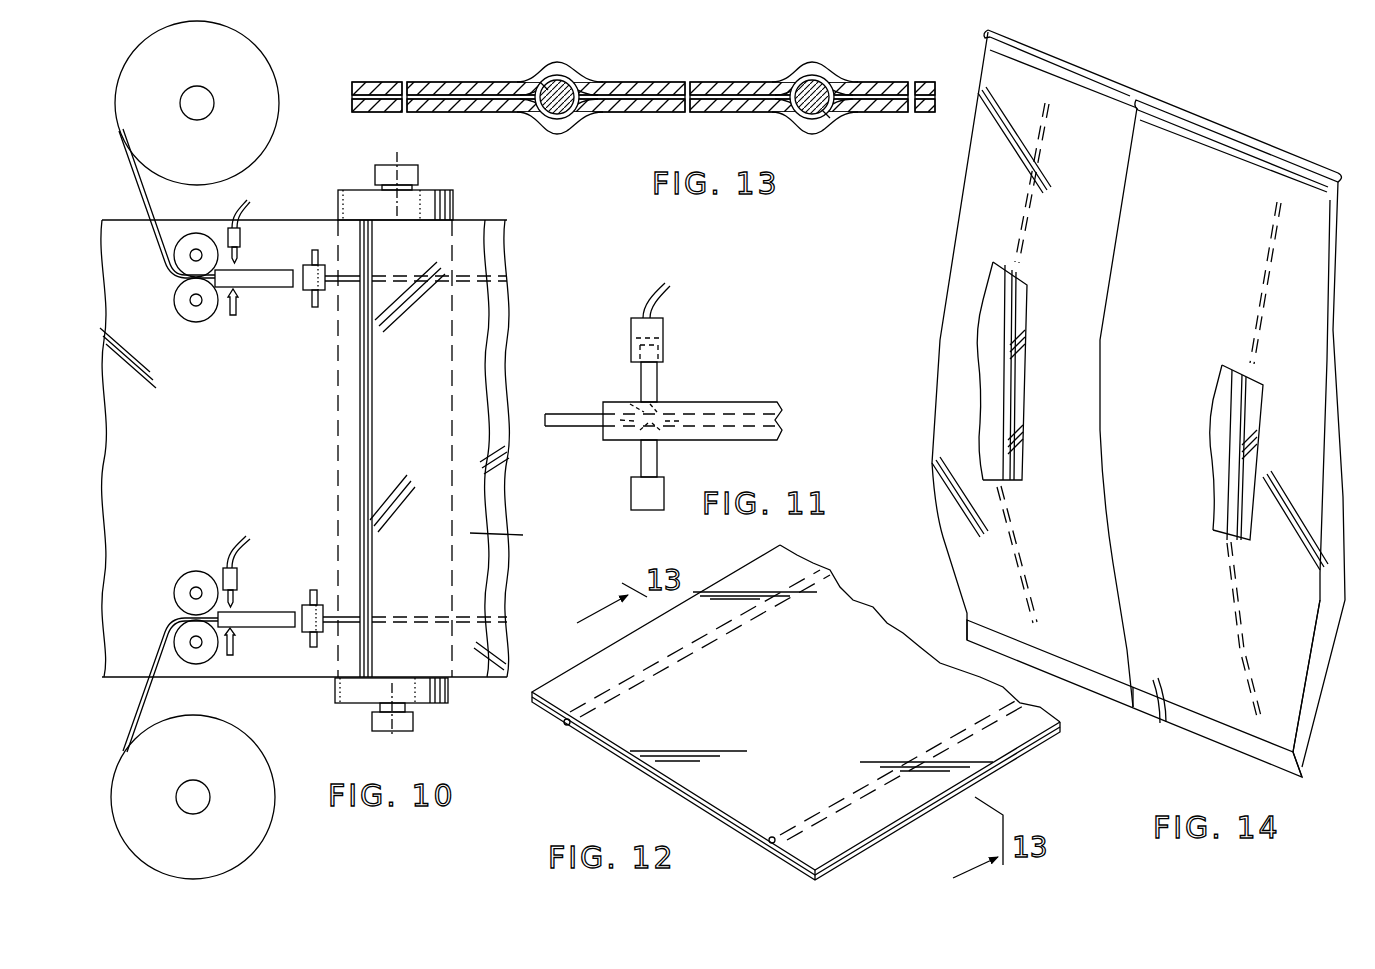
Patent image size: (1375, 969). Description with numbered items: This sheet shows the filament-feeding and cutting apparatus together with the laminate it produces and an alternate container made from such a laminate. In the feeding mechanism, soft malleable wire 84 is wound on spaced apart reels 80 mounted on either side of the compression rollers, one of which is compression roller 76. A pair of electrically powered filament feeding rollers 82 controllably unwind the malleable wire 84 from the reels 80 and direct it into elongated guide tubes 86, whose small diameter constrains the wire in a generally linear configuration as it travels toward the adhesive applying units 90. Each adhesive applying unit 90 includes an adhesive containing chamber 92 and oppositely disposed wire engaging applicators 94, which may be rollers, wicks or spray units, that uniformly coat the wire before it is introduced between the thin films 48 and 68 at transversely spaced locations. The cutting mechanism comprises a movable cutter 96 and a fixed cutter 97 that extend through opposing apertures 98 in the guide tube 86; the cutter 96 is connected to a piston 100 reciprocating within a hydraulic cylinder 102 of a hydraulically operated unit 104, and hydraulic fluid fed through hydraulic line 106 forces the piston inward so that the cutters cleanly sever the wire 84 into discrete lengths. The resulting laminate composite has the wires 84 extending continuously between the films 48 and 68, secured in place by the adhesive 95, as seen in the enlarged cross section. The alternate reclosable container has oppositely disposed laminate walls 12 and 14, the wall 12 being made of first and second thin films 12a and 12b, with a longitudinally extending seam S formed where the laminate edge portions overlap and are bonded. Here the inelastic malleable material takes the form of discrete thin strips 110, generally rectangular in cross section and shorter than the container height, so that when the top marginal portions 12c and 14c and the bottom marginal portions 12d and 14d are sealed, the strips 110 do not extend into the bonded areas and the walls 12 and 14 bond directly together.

In FIG. 14, the wall 12 is at (947, 248).
In FIG. 14, the first thin film 12a is at (979, 360).
In FIG. 14, the second thin film 12b is at (1013, 387).
In FIG. 14, the top marginal portion 12c is at (1085, 87).
In FIG. 14, the bottom marginal portion 12d is at (1220, 743).
In FIG. 14, the wall 14 is at (1260, 128).
In FIG. 14, the top marginal portion 14c is at (1137, 83).
In FIG. 14, the bottom marginal portion 14d is at (1303, 760).
In FIG. 14, the seam S is at (1127, 188).
In FIG. 10, the film 48 is at (509, 535).
In FIG. 13, the film 48 is at (662, 82).
In FIG. 12, the film 48 is at (608, 748).
In FIG. 10, the film 68 is at (304, 448).
In FIG. 13, the film 68 is at (647, 113).
In FIG. 12, the film 68 is at (677, 796).
In FIG. 10, the compression roller 76 is at (455, 202).
In FIG. 10, the reel 80 is at (270, 68).
In FIG. 10, the filament feeding roller 82 is at (170, 275).
In FIG. 10, the malleable wire 84 is at (143, 193).
In FIG. 13, the malleable wire 84 is at (551, 86).
In FIG. 11, the malleable wire 84 is at (573, 413).
In FIG. 12, the malleable wire 84 is at (738, 623).
In FIG. 10, the guide tube 86 is at (258, 290).
In FIG. 11, the guide tube 86 is at (747, 402).
In FIG. 10, the adhesive applying unit 90 is at (299, 264).
In FIG. 10, the adhesive containing chamber 92 is at (327, 274).
In FIG. 10, the wire engaging applicator 94 is at (313, 252).
In FIG. 13, the adhesive 95 is at (540, 82).
In FIG. 11, the cutter 96 is at (660, 372).
In FIG. 11, the fixed cutter 97 is at (660, 458).
In FIG. 11, the aperture 98 is at (627, 397).
In FIG. 11, the piston 100 is at (665, 323).
In FIG. 11, the hydraulic cylinder 102 is at (632, 338).
In FIG. 10, the hydraulically operated unit 104 is at (227, 232).
In FIG. 11, the hydraulically operated unit 104 is at (620, 315).
In FIG. 11, the hydraulic line 106 is at (661, 283).
In FIG. 14, the strip 110 is at (1013, 313).